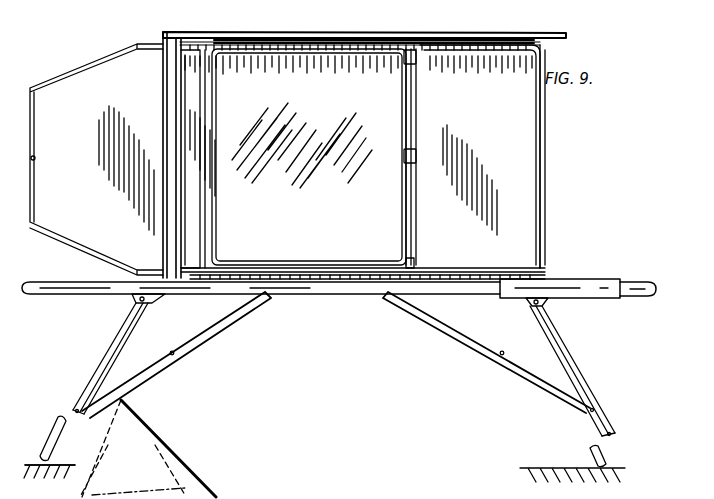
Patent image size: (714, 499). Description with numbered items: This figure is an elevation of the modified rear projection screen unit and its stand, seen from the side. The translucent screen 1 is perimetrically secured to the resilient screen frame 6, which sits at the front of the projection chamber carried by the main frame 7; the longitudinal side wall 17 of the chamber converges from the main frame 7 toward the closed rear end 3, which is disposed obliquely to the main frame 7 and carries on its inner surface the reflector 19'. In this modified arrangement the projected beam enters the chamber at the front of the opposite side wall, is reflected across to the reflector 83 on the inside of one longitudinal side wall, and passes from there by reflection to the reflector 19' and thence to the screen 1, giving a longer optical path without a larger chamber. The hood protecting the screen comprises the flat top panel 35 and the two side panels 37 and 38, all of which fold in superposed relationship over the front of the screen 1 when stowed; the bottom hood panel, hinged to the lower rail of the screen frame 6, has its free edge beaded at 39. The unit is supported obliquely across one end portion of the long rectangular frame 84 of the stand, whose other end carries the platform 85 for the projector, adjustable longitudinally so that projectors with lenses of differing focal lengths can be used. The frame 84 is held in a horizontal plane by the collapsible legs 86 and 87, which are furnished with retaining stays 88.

The translucent screen 1 is at (372, 105).
The closed rear end 3 is at (54, 457).
The screen frame 6 is at (408, 214).
The main frame 7 is at (162, 36).
The side wall of chamber 17 is at (89, 228).
The top panel of hood 35 is at (455, 36).
The side panel of hood 37 is at (194, 189).
The side panel of hood 38 is at (518, 145).
The beaded free edge 39 is at (367, 265).
The reflector 83 is at (217, 497).
The rectangular frame of stand 84 is at (634, 284).
The platform 85 is at (550, 283).
The collapsible leg 86 is at (80, 418).
The collapsible leg 87 is at (582, 386).
The retaining stays 88 is at (450, 323).
The reflector 19' is at (132, 448).